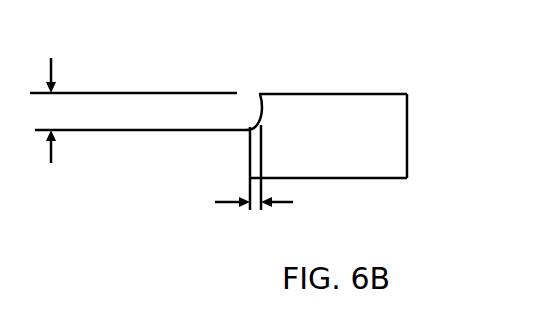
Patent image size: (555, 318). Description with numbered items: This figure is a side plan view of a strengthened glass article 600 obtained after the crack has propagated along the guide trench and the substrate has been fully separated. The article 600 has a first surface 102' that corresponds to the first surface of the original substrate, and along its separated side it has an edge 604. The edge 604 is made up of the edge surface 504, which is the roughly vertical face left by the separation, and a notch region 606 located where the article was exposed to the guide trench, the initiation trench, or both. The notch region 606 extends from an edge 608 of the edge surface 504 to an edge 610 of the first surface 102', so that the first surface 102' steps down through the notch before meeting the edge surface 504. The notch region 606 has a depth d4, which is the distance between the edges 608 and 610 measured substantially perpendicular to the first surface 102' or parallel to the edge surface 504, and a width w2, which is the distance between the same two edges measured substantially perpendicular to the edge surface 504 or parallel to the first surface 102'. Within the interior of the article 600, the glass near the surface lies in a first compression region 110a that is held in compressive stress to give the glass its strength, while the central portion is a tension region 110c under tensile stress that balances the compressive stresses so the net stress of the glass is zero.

The strengthened glass article 600 is at (449, 40).
The edge 604 is at (150, 178).
The notch region 606 is at (244, 86).
The edge of the edge surface 608 is at (256, 126).
The edge of the first surface 610 is at (260, 94).
The edge surface 504 is at (242, 169).
The first surface 102' is at (328, 136).
The first compression region 110a is at (400, 107).
The tension region 110c is at (388, 143).
The depth of the notch region d4 is at (49, 110).
The width of the notch region w2 is at (254, 219).